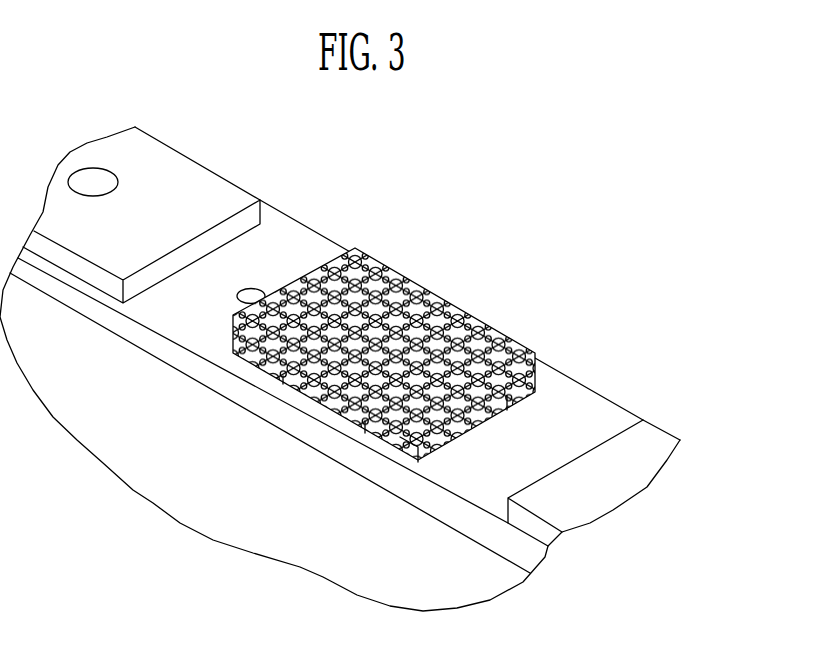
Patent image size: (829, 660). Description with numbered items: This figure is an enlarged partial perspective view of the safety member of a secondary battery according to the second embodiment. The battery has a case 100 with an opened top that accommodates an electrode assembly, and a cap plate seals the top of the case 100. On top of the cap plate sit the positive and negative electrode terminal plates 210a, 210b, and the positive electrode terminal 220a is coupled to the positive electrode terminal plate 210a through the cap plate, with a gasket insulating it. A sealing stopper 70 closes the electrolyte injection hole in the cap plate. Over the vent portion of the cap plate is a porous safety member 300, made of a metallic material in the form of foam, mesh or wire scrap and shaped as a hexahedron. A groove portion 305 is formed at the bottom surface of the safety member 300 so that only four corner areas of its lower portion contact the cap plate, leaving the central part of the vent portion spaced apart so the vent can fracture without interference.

The case 100 is at (153, 497).
The positive electrode terminal plate 210a is at (168, 177).
The negative electrode terminal plate 210b is at (648, 440).
The positive electrode terminal 220a is at (92, 183).
The sealing stopper 70 is at (250, 293).
The porous safety member 300 is at (433, 305).
The groove portion 305 is at (477, 421).